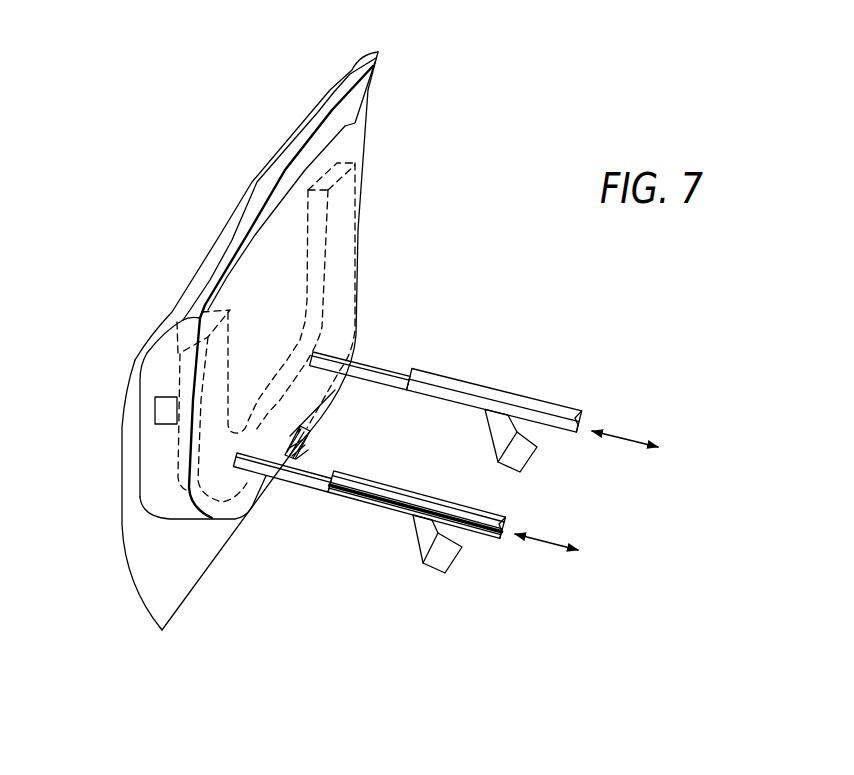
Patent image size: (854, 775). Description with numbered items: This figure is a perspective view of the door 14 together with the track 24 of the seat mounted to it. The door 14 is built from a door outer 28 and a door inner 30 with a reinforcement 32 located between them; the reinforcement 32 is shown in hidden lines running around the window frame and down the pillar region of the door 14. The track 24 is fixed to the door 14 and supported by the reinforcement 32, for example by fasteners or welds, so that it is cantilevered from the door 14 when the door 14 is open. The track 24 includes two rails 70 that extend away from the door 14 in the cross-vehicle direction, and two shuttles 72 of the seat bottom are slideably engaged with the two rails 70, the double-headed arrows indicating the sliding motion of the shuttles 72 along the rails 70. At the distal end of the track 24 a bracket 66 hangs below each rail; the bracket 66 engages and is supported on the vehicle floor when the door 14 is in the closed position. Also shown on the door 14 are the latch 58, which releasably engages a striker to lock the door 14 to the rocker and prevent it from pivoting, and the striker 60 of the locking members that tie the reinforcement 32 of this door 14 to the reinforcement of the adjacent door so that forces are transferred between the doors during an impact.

The door 14 is at (167, 308).
The track 24 is at (358, 429).
The door outer 28 is at (122, 493).
The door inner 30 is at (183, 572).
The reinforcement 32 is at (357, 257).
The latch 58 is at (306, 451).
The striker 60 is at (153, 410).
The bracket 66 is at (530, 462).
The rails 70 is at (377, 362).
The shuttles 72 is at (537, 399).